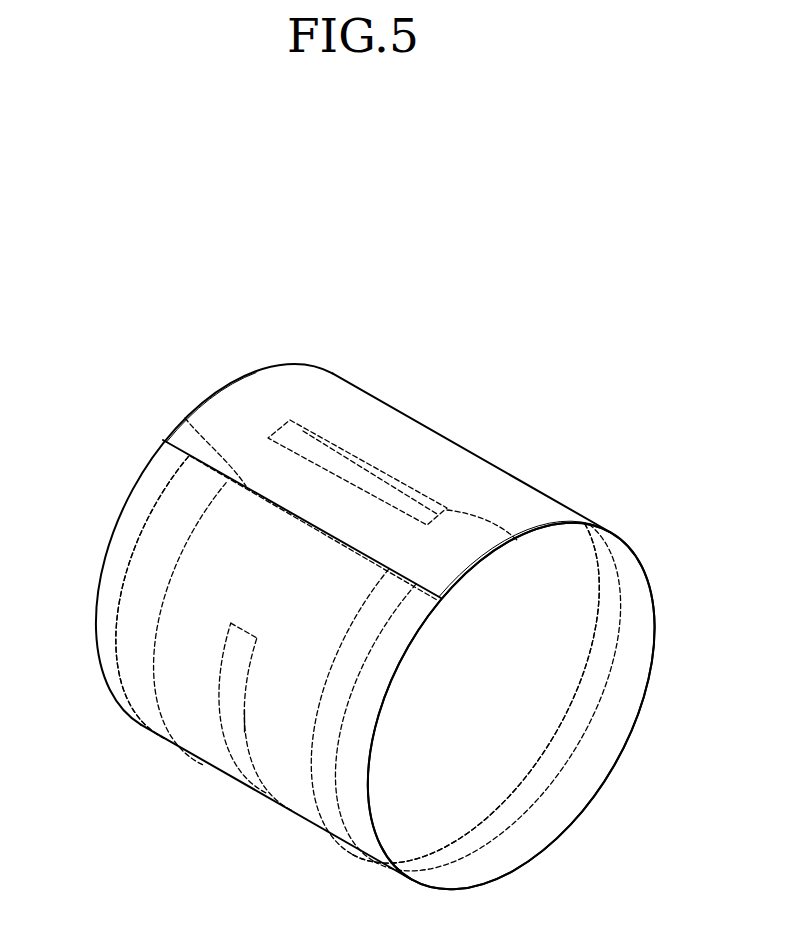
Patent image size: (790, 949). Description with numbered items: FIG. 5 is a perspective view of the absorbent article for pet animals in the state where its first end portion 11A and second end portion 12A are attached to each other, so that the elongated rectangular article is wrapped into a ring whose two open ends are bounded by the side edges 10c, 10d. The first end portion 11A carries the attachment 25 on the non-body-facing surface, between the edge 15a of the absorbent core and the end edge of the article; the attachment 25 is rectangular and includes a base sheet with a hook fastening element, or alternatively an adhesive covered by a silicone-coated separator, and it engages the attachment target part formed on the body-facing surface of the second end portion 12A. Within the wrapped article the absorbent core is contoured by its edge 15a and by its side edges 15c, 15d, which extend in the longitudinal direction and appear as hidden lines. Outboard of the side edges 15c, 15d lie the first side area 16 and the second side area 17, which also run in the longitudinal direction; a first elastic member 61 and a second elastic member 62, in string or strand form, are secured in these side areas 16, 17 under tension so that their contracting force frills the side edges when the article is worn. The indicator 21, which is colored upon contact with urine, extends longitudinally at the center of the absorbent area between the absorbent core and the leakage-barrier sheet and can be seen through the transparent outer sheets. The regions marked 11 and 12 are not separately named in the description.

The cylindrical body 11 is at (273, 780).
The first end portion 11A is at (465, 577).
The side edge 10c is at (410, 645).
The side edge 10d is at (135, 483).
The ring portion 12 is at (547, 642).
The second end portion 12A is at (232, 415).
The edge of absorbent core 15a is at (185, 418).
The side edge of absorbent core 15c is at (170, 568).
The side edge of absorbent core 15d is at (567, 707).
The first side area 16 is at (133, 647).
The second side area 17 is at (578, 773).
The indicator 21 is at (221, 744).
The attachment 25 is at (448, 518).
The first elastic member 61 is at (125, 588).
The second elastic member 62 is at (620, 590).